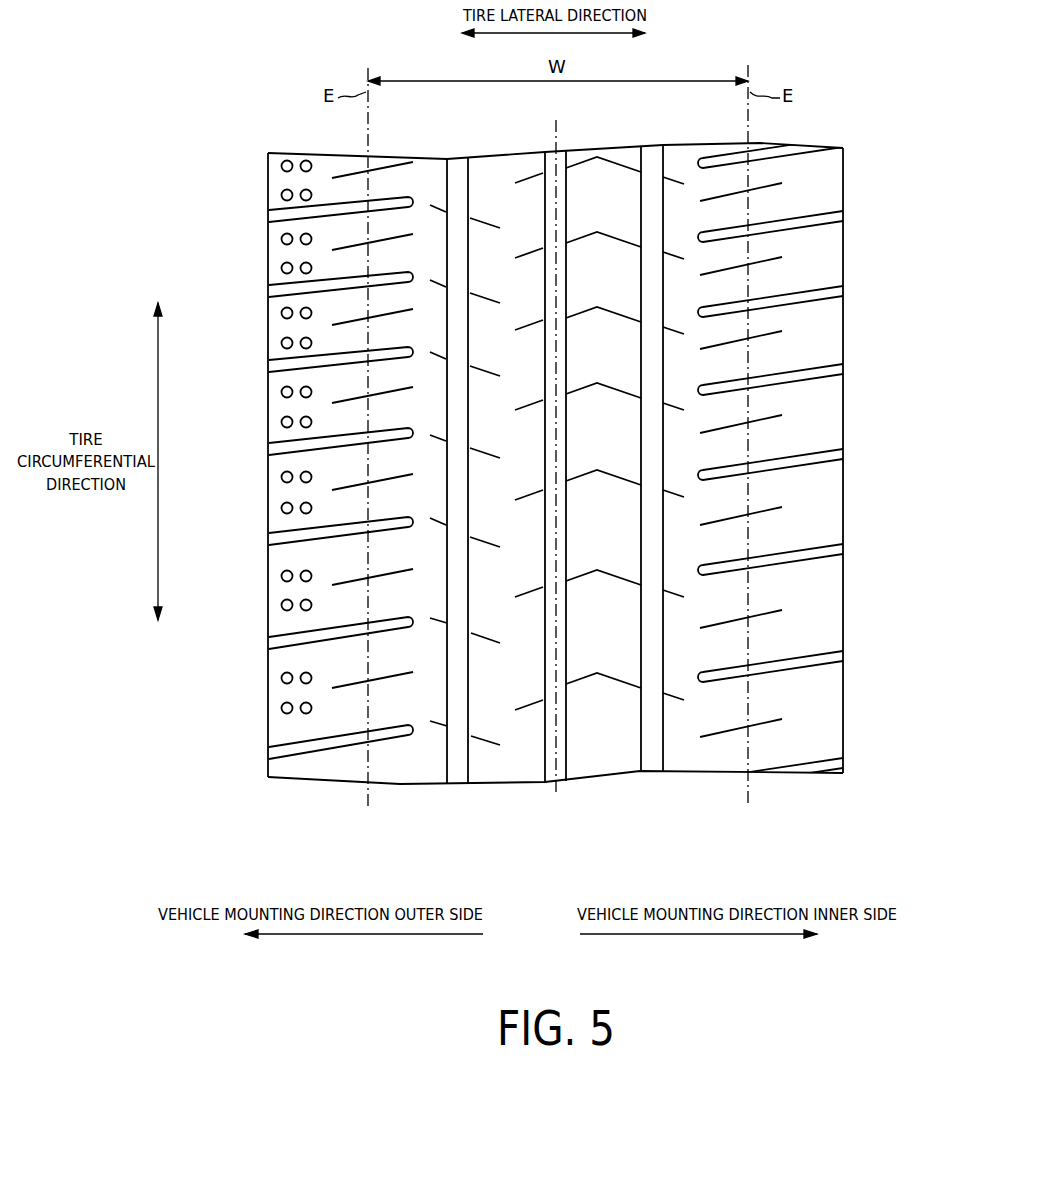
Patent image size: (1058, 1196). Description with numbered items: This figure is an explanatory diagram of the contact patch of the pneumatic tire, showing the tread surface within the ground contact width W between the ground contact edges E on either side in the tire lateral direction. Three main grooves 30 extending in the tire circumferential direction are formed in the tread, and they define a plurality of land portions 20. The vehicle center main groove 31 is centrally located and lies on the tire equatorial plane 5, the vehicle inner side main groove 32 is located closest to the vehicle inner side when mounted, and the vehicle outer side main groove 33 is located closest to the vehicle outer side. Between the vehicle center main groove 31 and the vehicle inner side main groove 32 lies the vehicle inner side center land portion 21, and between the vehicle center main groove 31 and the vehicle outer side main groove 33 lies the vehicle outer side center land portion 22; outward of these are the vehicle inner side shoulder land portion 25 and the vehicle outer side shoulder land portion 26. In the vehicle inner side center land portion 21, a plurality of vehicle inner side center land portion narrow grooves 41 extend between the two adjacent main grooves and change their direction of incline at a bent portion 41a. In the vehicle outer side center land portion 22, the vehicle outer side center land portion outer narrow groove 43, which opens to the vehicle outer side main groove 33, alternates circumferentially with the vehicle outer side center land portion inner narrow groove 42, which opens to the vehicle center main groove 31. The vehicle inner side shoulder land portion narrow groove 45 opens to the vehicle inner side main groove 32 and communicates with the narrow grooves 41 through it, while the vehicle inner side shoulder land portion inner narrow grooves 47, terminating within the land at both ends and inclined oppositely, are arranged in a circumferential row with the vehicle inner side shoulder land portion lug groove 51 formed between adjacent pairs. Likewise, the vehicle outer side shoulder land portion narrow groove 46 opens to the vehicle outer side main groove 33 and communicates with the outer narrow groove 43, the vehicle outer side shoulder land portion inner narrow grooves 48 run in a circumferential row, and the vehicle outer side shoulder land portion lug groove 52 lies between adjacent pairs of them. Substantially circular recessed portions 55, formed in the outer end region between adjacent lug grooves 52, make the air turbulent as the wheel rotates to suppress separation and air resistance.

The tire equatorial plane 5 is at (554, 122).
The land portions 20 is at (558, 495).
The vehicle inner side center land portion 21 is at (750, 505).
The vehicle outer side center land portion 22 is at (362, 513).
The vehicle inner side shoulder land portion 25 is at (813, 495).
The vehicle outer side shoulder land portion 26 is at (358, 508).
The main grooves 30 is at (567, 442).
The vehicle center main groove 31 is at (548, 153).
The vehicle inner side main groove 32 is at (677, 124).
The vehicle outer side main groove 33 is at (457, 158).
The vehicle inner side center land portion narrow groove 41 is at (750, 428).
The bent portion 41a is at (597, 383).
The vehicle outer side center land portion inner narrow groove 42 is at (535, 405).
The vehicle outer side center land portion outer narrow groove 43 is at (470, 448).
The vehicle inner side shoulder land portion narrow groove 45 is at (705, 390).
The vehicle outer side shoulder land portion narrow groove 46 is at (442, 438).
The vehicle inner side shoulder land portion inner narrow groove 47 is at (753, 512).
The vehicle outer side shoulder land portion inner narrow groove 48 is at (362, 486).
The vehicle inner side shoulder land portion lug groove 51 is at (770, 550).
The vehicle outer side shoulder land portion lug groove 52 is at (368, 525).
The recessed portions 55 is at (300, 476).